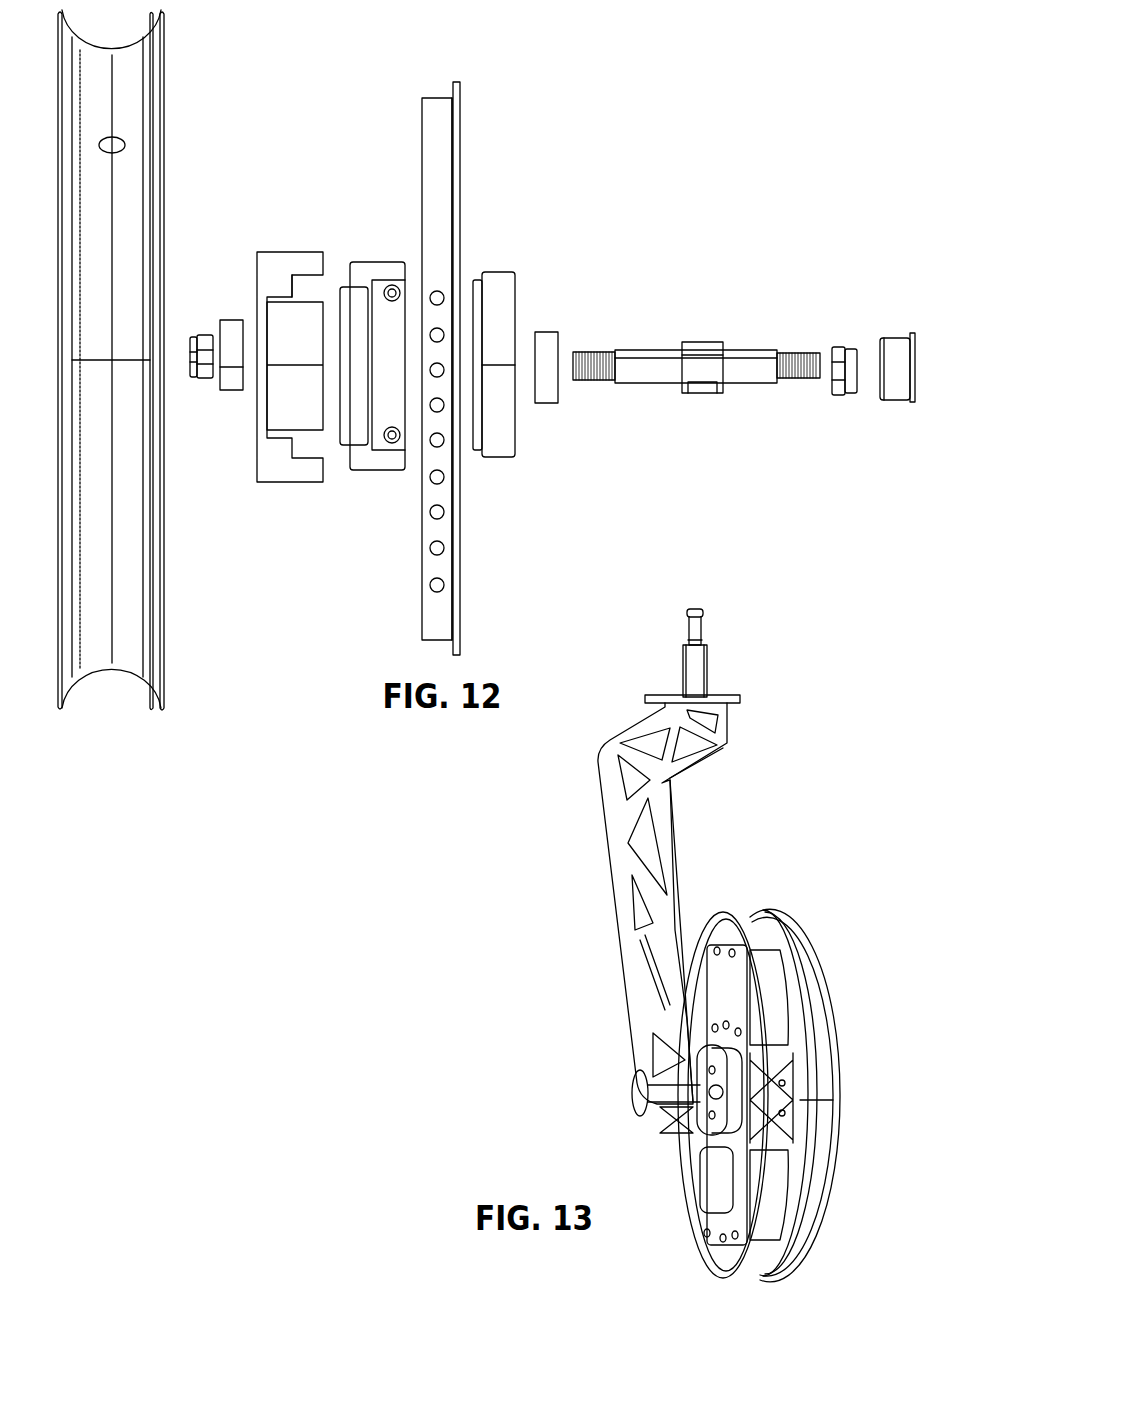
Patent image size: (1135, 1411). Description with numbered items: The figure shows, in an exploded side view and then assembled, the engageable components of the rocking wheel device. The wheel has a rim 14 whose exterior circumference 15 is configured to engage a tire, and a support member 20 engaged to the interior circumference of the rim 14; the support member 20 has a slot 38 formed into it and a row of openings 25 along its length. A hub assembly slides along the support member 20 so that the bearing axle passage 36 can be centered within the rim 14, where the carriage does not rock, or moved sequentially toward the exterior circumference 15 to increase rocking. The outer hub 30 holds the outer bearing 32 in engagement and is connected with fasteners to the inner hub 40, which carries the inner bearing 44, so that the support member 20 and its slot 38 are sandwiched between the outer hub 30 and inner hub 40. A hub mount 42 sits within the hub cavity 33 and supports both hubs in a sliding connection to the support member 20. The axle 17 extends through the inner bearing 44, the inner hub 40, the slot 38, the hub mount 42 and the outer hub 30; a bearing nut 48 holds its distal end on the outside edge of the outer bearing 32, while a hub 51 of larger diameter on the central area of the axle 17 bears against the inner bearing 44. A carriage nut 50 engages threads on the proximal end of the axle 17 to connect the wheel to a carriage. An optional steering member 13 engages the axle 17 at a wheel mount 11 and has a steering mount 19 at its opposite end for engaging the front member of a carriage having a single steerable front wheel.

In FIG. 13, the wheel mount 11 is at (657, 1102).
In FIG. 13, the steering member 13 is at (627, 825).
In FIG. 12, the rim 14 is at (162, 558).
In FIG. 13, the rim 14 is at (802, 928).
In FIG. 12, the exterior circumference 15 is at (129, 637).
In FIG. 13, the exterior circumference 15 is at (807, 1040).
In FIG. 12, the axle 17 is at (640, 385).
In FIG. 13, the axle 17 is at (708, 1130).
In FIG. 13, the steering mount 19 is at (700, 667).
In FIG. 12, the support member 20 is at (512, 368).
In FIG. 13, the support member 20 is at (727, 982).
In FIG. 12, the adjustment holes 25 is at (445, 550).
In FIG. 12, the outer hub 30 is at (283, 262).
In FIG. 12, the outer bearing 32 is at (230, 320).
In FIG. 12, the hub cavity 33 is at (305, 292).
In FIG. 13, the bearing axle passage 36 is at (637, 1037).
In FIG. 13, the slot 38 is at (723, 1187).
In FIG. 12, the inner hub 40 is at (502, 283).
In FIG. 13, the inner hub 40 is at (710, 1127).
In FIG. 12, the hub mount 42 is at (377, 463).
In FIG. 12, the inner bearing 44 is at (547, 338).
In FIG. 12, the bearing nut 48 is at (193, 335).
In FIG. 12, the carriage nut 50 is at (838, 383).
In FIG. 12, the hub 51 is at (698, 342).